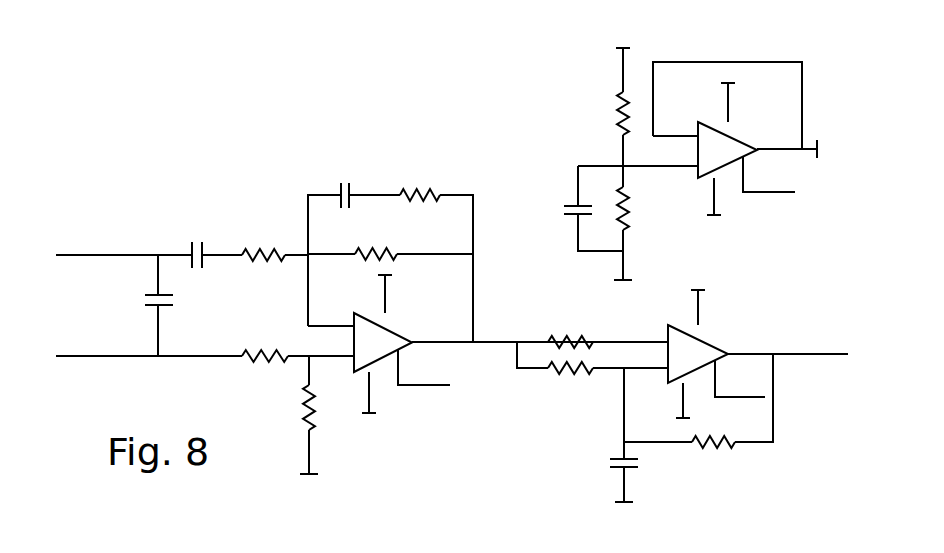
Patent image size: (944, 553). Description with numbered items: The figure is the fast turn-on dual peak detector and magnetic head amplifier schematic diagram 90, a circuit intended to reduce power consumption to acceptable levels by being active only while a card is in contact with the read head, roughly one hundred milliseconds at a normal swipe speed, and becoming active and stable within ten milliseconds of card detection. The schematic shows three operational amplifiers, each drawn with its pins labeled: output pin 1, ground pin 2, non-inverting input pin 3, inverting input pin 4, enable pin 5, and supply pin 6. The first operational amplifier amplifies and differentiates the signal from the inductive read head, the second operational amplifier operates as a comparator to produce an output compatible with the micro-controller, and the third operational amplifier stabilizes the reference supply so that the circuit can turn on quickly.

The fast turn-on dual peak detector and magnetic head amplifier schematic diagram 90 is at (220, 134).
The op-amp output pin 1 is at (630, 244).
The op-amp ground pin 2 is at (538, 298).
The op-amp non-inverting input pin 3 is at (493, 260).
The op-amp inverting input pin 4 is at (503, 232).
The op-amp enable pin 5 is at (590, 277).
The op-amp supply pin 6 is at (553, 204).